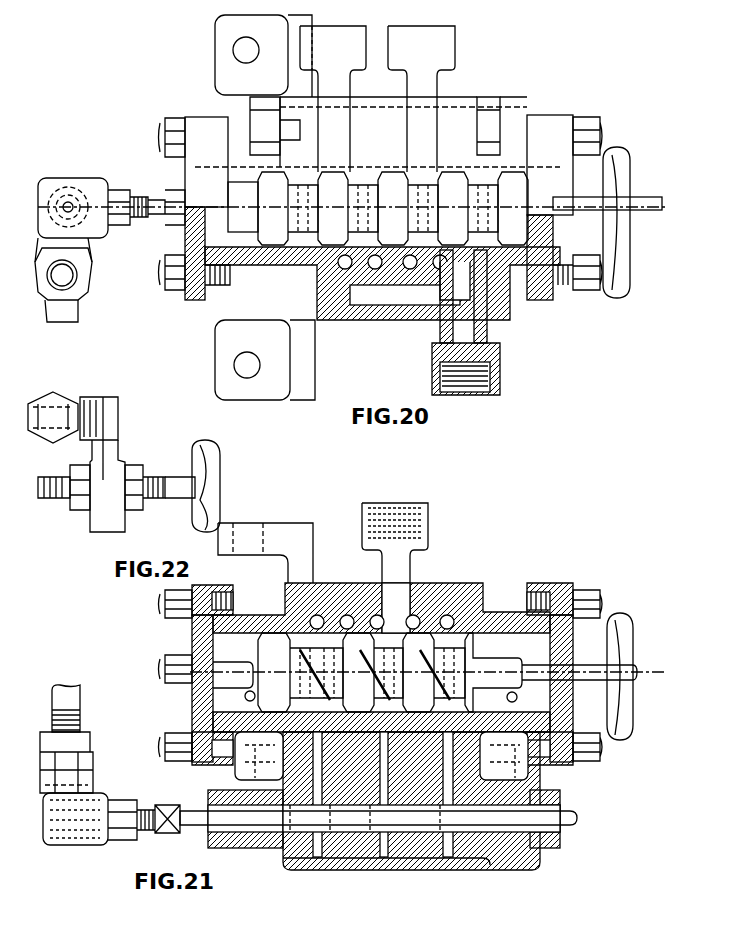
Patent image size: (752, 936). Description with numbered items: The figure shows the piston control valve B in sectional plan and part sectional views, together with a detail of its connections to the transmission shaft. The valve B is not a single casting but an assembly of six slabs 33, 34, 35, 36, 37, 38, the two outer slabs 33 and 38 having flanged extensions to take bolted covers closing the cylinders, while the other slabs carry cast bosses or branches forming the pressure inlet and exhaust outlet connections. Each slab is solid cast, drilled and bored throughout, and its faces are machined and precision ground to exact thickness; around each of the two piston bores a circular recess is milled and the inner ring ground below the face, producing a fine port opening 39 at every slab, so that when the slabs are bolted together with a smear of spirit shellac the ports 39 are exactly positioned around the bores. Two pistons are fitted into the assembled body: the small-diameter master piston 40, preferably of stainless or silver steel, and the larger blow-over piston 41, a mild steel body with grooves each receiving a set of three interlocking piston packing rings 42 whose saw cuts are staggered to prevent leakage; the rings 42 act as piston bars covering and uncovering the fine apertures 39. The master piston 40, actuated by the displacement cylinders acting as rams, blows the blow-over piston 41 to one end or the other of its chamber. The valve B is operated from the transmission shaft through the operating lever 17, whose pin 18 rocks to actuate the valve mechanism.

In FIG. 20, the operating lever 17 is at (80, 246).
In FIG. 22, the operating lever 17 is at (115, 515).
In FIG. 22, the pin 18 is at (112, 413).
In FIG. 20, the piston control valve B is at (386, 322).
In FIG. 21, the piston control valve B is at (460, 583).
In FIG. 21, the slab 33 is at (309, 870).
In FIG. 21, the slab 34 is at (342, 870).
In FIG. 21, the slab 35 is at (368, 870).
In FIG. 21, the slab 36 is at (395, 870).
In FIG. 21, the slab 37 is at (427, 870).
In FIG. 21, the slab 38 is at (458, 870).
In FIG. 21, the port openings 39 is at (357, 637).
In FIG. 21, the master piston 40 is at (405, 818).
In FIG. 21, the blow-over piston 41 is at (503, 675).
In FIG. 21, the piston packing rings 42 is at (292, 665).